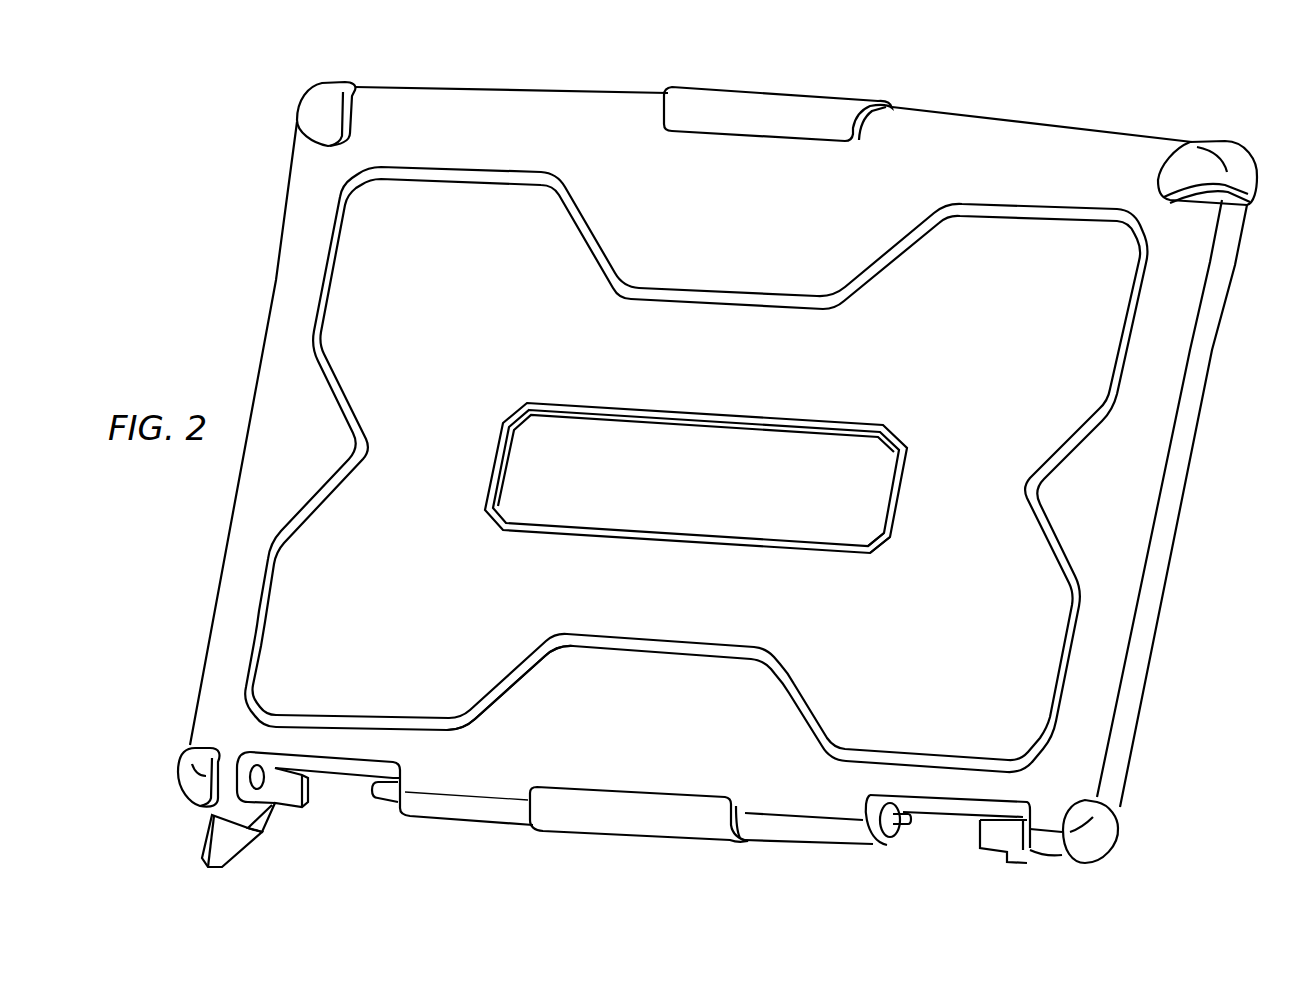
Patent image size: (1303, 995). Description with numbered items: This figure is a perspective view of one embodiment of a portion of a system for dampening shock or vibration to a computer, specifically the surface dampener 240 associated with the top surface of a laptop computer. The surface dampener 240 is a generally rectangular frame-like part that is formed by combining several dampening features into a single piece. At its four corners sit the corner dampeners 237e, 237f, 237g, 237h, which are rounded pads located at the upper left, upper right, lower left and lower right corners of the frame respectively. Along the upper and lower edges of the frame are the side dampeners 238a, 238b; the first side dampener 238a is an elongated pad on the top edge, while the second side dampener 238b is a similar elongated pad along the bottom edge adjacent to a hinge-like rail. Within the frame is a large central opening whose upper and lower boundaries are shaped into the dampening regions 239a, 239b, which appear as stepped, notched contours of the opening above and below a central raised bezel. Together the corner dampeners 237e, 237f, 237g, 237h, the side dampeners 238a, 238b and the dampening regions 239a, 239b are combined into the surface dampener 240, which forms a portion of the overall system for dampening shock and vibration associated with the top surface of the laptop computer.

The surface dampener 240 is at (1201, 523).
The corner dampener 237e is at (298, 118).
The corner dampener 237f is at (1216, 138).
The corner dampener 237g is at (178, 788).
The corner dampener 237h is at (1120, 830).
The side dampener 238a is at (800, 98).
The side dampener 238b is at (610, 826).
The dampening region 239a is at (610, 234).
The dampening region 239b is at (527, 683).